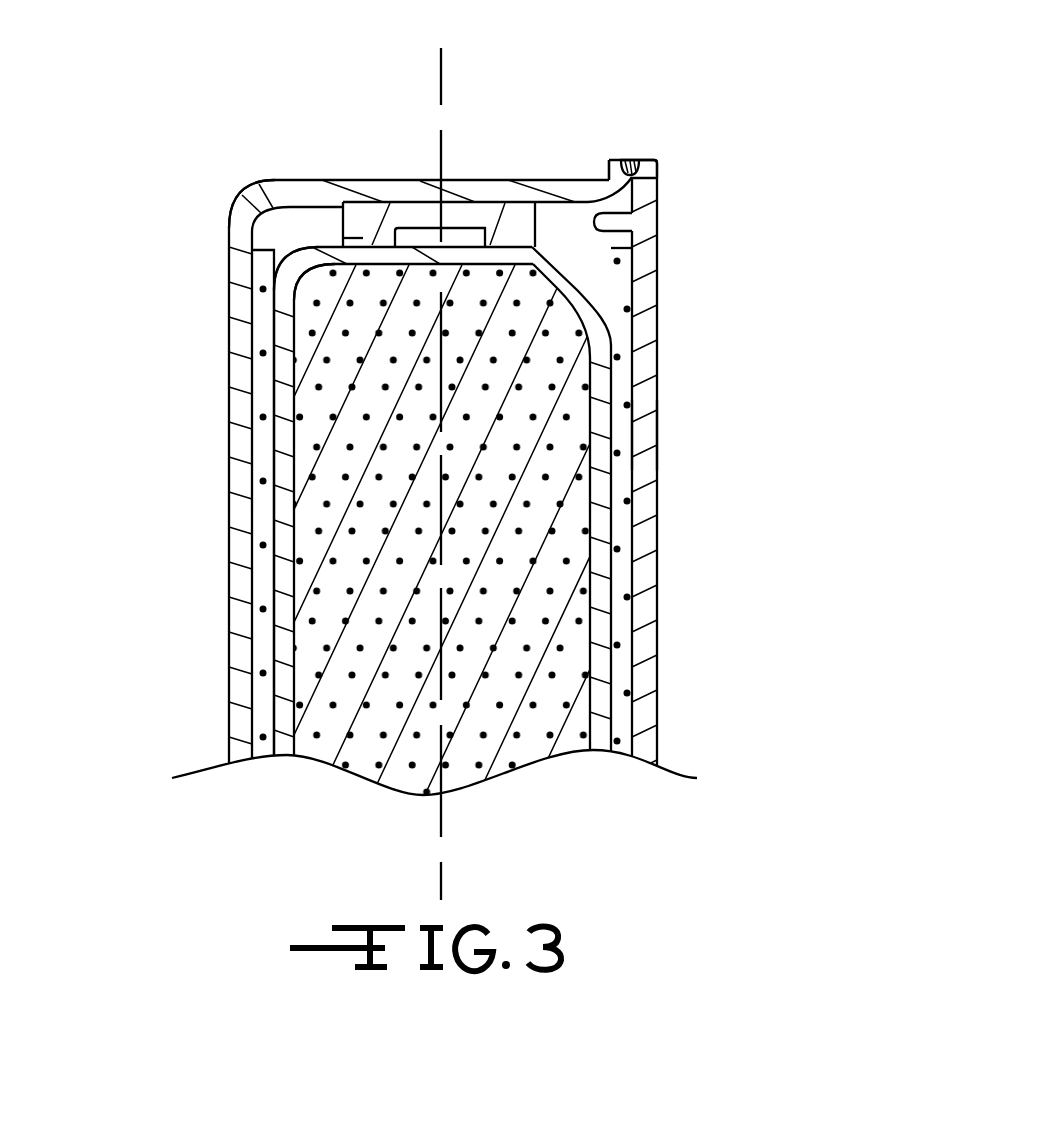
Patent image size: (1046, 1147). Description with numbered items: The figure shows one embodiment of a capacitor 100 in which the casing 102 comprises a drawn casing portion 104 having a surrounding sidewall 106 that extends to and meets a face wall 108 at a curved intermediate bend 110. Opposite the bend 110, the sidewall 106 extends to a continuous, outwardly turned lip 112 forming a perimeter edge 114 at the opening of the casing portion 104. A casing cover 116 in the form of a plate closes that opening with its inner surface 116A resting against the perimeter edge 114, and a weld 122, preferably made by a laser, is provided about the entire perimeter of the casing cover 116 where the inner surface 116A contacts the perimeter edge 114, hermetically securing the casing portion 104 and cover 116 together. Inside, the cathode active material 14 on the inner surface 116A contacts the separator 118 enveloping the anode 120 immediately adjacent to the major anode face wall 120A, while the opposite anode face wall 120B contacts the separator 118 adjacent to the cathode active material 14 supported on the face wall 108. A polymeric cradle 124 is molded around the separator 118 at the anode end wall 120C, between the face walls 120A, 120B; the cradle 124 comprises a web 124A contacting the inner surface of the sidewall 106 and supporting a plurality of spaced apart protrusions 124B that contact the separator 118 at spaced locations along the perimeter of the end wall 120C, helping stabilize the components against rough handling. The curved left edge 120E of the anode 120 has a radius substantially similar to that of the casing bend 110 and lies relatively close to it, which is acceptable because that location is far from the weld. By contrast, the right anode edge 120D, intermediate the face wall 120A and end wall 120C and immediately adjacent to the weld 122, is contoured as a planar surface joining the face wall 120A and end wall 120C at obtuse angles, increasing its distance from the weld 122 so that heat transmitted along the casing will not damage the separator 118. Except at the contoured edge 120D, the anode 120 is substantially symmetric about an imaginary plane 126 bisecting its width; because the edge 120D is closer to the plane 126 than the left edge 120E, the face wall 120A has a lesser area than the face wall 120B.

The capacitor 100 is at (770, 145).
The casing 102 is at (244, 154).
The drawn casing portion 104 is at (227, 341).
The sidewall 106 is at (469, 197).
The face wall 108 is at (256, 488).
The curved intermediate bend 110 is at (242, 198).
The outwardly turned lip 112 is at (609, 178).
The perimeter edge 114 is at (658, 180).
The casing cover 116 is at (657, 348).
The inner surface of casing cover 116A is at (628, 209).
The separator 118 is at (612, 565).
The anode 120 is at (533, 727).
The major anode face wall 120A is at (594, 702).
The anode face wall 120B is at (296, 668).
The anode end wall 120C is at (501, 262).
The contoured right anode edge 120D is at (558, 299).
The curved left edge 120E is at (283, 268).
The weld 122 is at (631, 158).
The polymeric cradle 124 is at (323, 222).
The web 124A is at (398, 226).
The protrusions 124B is at (343, 238).
The imaginary plane 126 is at (441, 72).
The cathode active material 14 is at (640, 433).